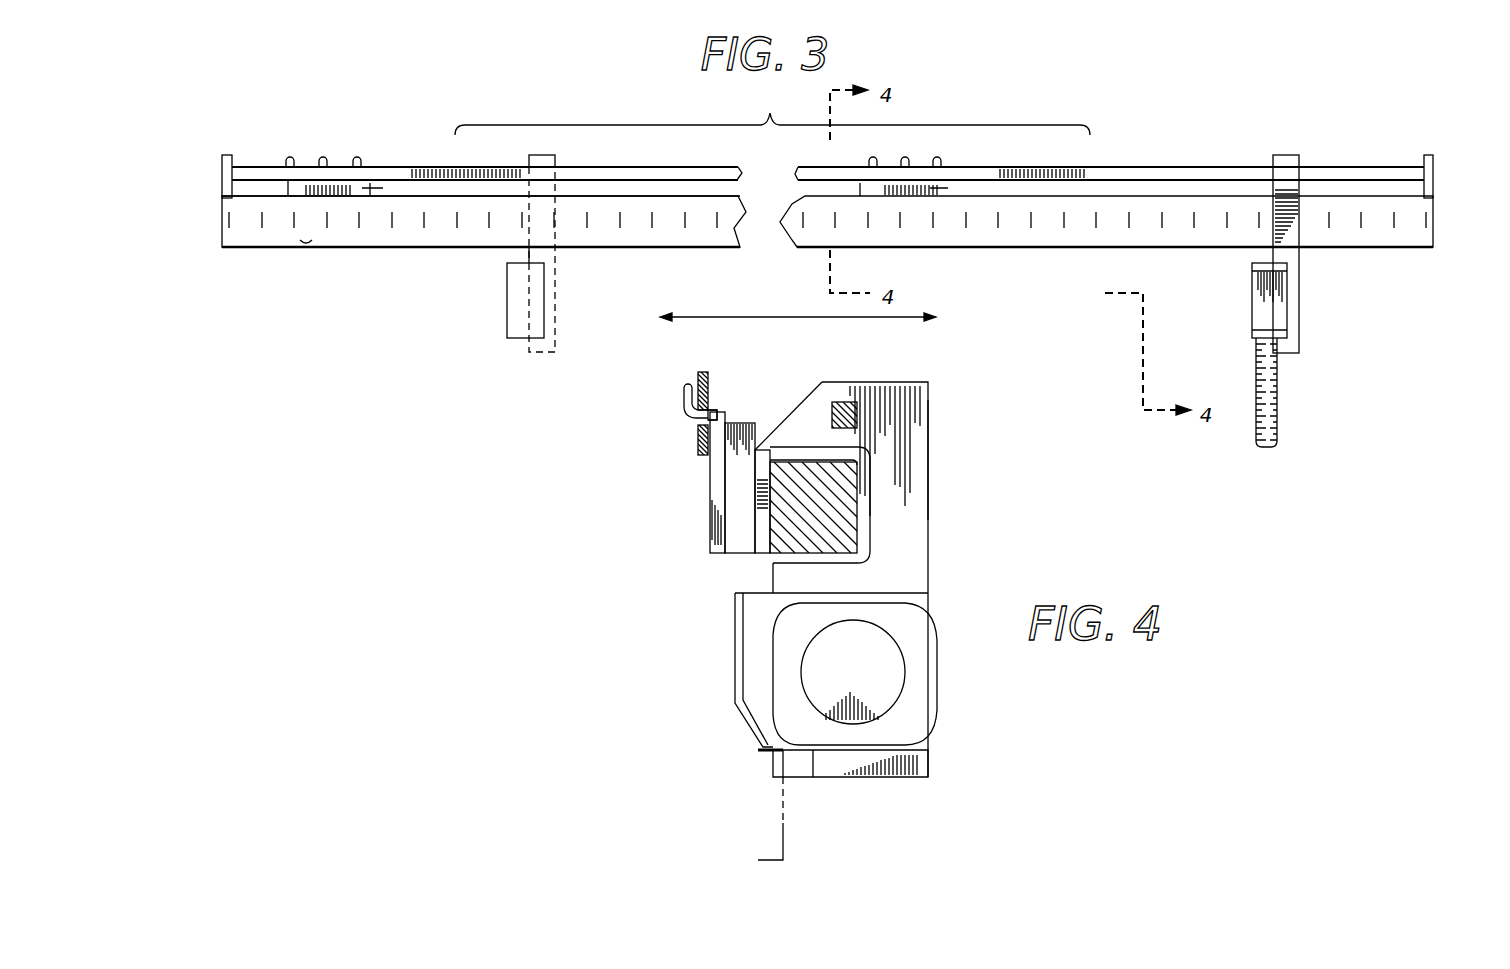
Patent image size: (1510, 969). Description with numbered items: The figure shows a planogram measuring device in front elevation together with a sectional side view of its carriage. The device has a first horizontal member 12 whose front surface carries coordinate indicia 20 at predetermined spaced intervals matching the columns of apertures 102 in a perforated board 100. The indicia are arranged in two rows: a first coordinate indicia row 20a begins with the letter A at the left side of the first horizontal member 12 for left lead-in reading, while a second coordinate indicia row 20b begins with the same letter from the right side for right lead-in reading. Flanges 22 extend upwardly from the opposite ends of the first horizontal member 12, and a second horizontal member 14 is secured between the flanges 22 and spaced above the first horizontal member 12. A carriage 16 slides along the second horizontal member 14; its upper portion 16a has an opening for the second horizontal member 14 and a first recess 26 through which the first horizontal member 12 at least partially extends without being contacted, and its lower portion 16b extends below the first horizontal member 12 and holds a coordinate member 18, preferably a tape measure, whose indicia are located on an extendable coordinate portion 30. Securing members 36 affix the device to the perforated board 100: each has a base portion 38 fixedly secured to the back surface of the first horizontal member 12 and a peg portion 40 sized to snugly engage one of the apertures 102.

In FIG. 3, the first horizontal member 12 is at (247, 250).
In FIG. 4, the first horizontal member 12 is at (775, 553).
In FIG. 3, the second horizontal member 14 is at (262, 167).
In FIG. 4, the second horizontal member 14 is at (846, 404).
In FIG. 3, the carriage 16 is at (543, 353).
In FIG. 4, the carriage 16 is at (975, 549).
In FIG. 4, the upper portion 16a is at (917, 465).
In FIG. 4, the lower portion 16b is at (925, 751).
In FIG. 3, the coordinate member 18 is at (518, 340).
In FIG. 4, the coordinate member 18 is at (920, 667).
In FIG. 3, the coordinate indicia 20 is at (318, 250).
In FIG. 3, the first coordinate indicia row 20a is at (214, 202).
In FIG. 3, the second coordinate indicia row 20b is at (214, 242).
In FIG. 3, the flanges 22 is at (222, 172).
In FIG. 4, the first recess 26 is at (812, 455).
In FIG. 3, the extendable coordinate portion 30 is at (1278, 398).
In FIG. 4, the extendable coordinate portion 30 is at (790, 833).
In FIG. 4, the securing members 36 is at (694, 483).
In FIG. 3, the base portion 38 is at (362, 188).
In FIG. 4, the base portion 38 is at (736, 425).
In FIG. 3, the peg portion 40 is at (325, 165).
In FIG. 4, the peg portion 40 is at (688, 411).
In FIG. 4, the perforated board 100 is at (706, 372).
In FIG. 4, the apertures 102 is at (708, 406).